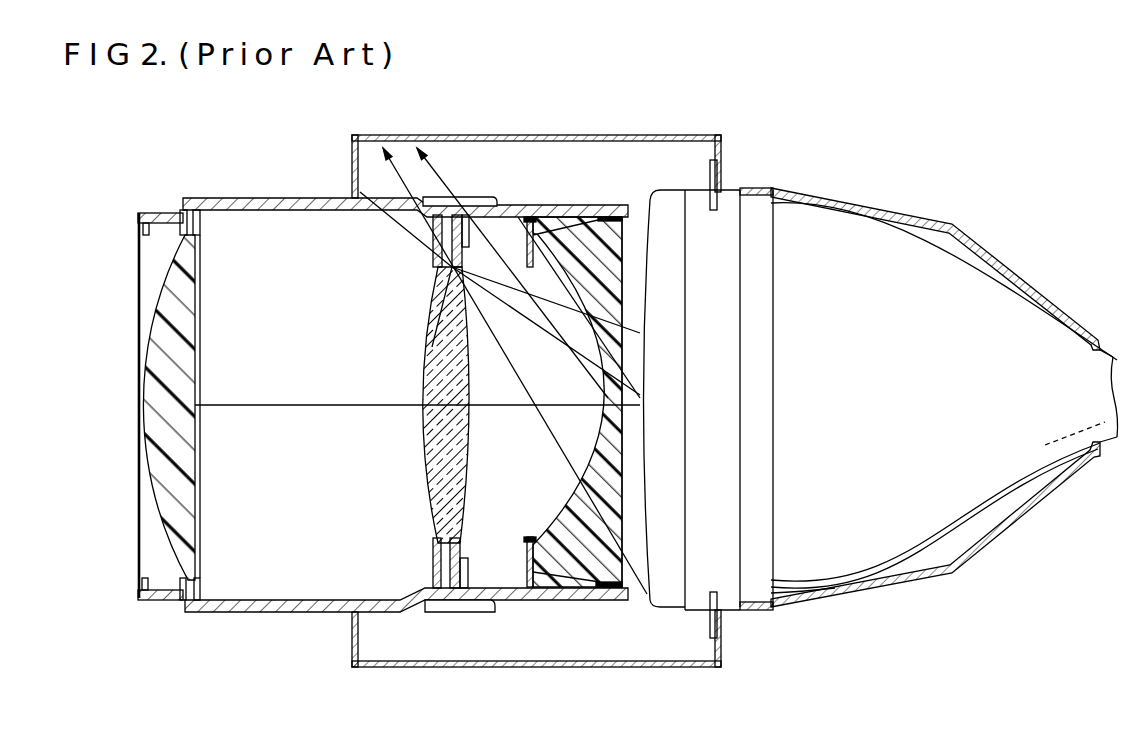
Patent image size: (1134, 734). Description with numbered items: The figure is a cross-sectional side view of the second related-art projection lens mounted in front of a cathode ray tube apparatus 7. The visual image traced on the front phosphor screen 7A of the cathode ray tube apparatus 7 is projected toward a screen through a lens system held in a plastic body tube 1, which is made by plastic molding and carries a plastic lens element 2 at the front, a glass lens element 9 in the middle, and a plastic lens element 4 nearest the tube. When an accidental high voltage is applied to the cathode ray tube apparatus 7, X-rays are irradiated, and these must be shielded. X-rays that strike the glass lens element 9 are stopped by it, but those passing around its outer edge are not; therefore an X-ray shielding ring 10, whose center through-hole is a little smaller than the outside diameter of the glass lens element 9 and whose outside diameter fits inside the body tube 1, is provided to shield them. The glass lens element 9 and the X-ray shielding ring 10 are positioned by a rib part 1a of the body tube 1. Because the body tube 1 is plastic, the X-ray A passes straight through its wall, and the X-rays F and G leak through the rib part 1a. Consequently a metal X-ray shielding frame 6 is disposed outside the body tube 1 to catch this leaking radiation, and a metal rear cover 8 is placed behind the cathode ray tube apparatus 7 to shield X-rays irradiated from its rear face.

The body tube 1 is at (248, 197).
The rib part 1a is at (468, 240).
The plastic lens element 2 is at (162, 488).
The plastic lens element 4 is at (567, 568).
The X-ray shielding frame 6 is at (458, 663).
The cathode ray tube apparatus 7 is at (832, 225).
The front phosphor screen 7A is at (643, 510).
The rear cover 8 is at (842, 596).
The glass lens element 9 is at (420, 470).
The X-ray shielding ring 10 is at (483, 595).
The X-ray F is at (390, 156).
The X-ray A is at (435, 168).
The X-ray G is at (413, 230).